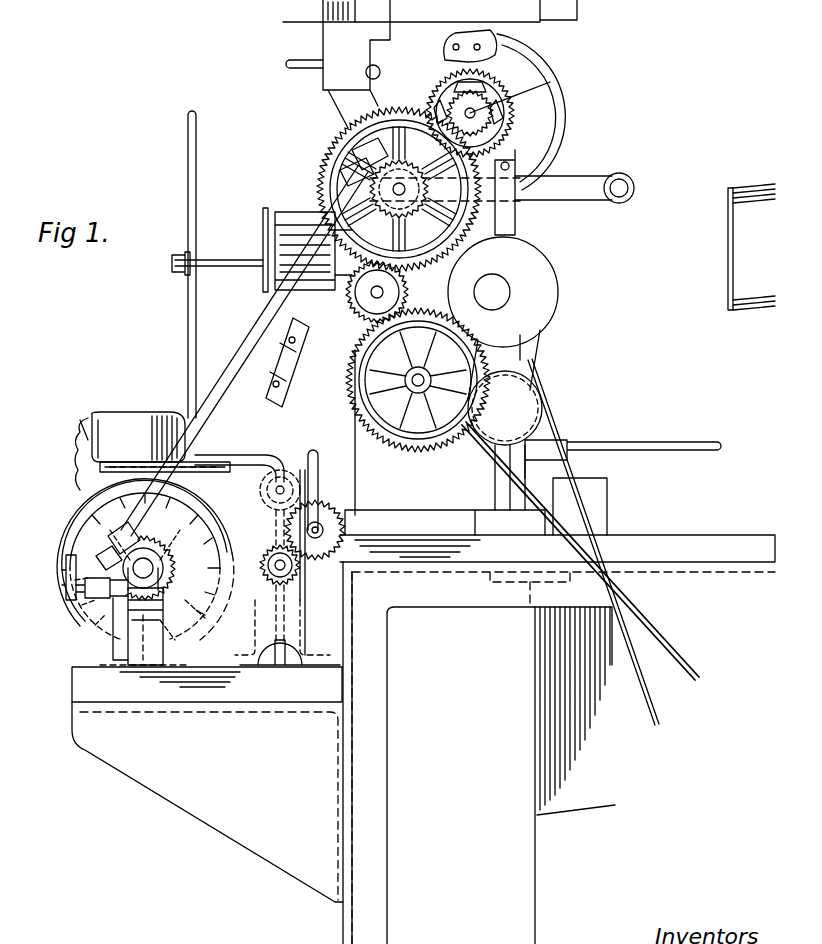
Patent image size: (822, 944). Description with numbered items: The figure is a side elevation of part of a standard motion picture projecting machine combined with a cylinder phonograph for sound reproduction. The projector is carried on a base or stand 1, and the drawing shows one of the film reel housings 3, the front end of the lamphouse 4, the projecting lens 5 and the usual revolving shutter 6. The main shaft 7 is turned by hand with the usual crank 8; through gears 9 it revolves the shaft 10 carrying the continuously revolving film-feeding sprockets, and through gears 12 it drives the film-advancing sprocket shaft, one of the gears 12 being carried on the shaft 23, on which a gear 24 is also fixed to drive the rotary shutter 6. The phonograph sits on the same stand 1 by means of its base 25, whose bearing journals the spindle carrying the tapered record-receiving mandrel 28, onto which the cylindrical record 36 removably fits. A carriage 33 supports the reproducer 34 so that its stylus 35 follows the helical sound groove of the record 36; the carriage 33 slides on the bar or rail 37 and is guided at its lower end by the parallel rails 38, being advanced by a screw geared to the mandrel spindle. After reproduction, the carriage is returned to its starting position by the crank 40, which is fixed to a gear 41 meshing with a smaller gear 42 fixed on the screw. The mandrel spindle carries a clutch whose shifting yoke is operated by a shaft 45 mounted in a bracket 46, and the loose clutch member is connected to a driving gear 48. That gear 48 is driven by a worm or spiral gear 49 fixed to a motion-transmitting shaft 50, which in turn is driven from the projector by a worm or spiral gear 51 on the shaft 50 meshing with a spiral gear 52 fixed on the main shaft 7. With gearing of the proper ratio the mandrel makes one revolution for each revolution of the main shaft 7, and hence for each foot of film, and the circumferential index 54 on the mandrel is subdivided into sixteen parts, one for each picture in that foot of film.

The base or stand 1 is at (445, 595).
The film reel housing 3 is at (580, 542).
The front end of the lamphouse 4 is at (728, 232).
The projecting lens 5 is at (264, 235).
The revolving shutter 6 is at (196, 180).
The main shaft 7 is at (402, 185).
The crank 8 is at (566, 184).
The gears 9 is at (403, 112).
The shaft 10 is at (545, 88).
The gears 12 is at (355, 318).
The shaft 23 is at (372, 292).
The gear 24 is at (375, 302).
The phonograph base 25 is at (207, 784).
The record-receiving mandrel 28 is at (70, 580).
The carriage 33 is at (258, 456).
The reproducer 34 is at (105, 440).
The stylus 35 is at (130, 466).
The record 36 is at (62, 550).
The bar or rail 37 is at (274, 490).
The parallel rails 38 is at (288, 655).
The crank 40 is at (318, 457).
The gear 41 is at (328, 510).
The gear 42 is at (275, 558).
The shaft 45 is at (98, 592).
The bracket 46 is at (110, 600).
The driving gear 48 is at (200, 490).
The worm or spiral gear 49 is at (122, 545).
The motion-transmitting shaft 50 is at (196, 430).
The worm or spiral gear 51 is at (352, 165).
The spiral gear 52 is at (421, 189).
The circumferential index 54 is at (170, 520).